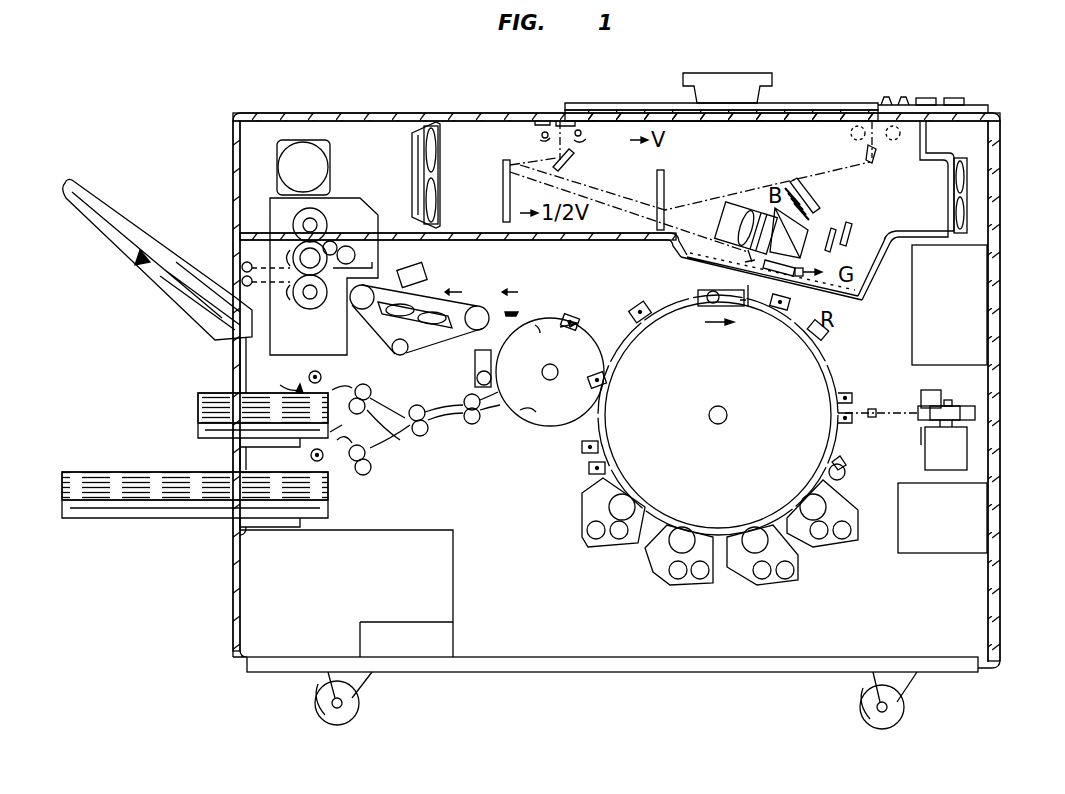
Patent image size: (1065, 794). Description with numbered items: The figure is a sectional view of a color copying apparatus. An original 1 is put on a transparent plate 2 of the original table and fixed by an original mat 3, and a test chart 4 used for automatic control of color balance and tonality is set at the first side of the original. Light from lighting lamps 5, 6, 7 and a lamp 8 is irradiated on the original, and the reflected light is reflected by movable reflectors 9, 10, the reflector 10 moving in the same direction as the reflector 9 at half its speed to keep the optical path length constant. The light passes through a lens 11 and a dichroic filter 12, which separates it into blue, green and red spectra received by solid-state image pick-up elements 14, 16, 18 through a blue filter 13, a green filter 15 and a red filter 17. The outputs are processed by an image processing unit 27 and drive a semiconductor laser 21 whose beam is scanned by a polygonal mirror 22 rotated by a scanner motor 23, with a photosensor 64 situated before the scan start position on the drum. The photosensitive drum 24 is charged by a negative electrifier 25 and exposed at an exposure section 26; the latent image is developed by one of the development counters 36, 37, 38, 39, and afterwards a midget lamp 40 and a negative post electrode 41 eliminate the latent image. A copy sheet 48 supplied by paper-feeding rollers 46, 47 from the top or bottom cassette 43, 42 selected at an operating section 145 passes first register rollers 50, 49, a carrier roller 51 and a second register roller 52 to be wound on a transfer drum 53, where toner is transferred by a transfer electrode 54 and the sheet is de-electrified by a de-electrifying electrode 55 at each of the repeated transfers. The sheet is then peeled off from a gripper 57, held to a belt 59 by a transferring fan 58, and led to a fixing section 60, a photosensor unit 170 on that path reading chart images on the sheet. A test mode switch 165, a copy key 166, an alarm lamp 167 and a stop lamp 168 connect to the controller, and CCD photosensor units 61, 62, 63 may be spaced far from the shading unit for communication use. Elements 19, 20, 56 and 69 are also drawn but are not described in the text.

The original 1 is at (851, 111).
The transparent plate 2 is at (796, 110).
The original mat 3 is at (614, 103).
The test chart 4 is at (541, 120).
The lighting lamp 5 is at (542, 135).
The lighting lamp 6 is at (581, 133).
The lighting lamp 7 is at (540, 140).
The lamp 8 is at (586, 140).
The movable reflector 9 is at (570, 165).
The movable reflector 10 is at (503, 166).
The lens 11 is at (725, 245).
The dichroic filter 12 is at (810, 222).
The blue filter 13 is at (786, 190).
The solid-state image pick-up element 14 is at (832, 192).
The green filter 15 is at (862, 216).
The solid-state image pick-up element 16 is at (836, 240).
The red filter 17 is at (757, 260).
The solid-state image pick-up element 18 is at (820, 279).
The fan 19 is at (968, 195).
The fan 20 is at (420, 168).
The semiconductor laser 21 is at (941, 394).
The polygonal mirror 22 is at (975, 414).
The scanner motor 23 is at (967, 450).
The photosensitive drum 24 is at (833, 373).
The negative electrifier 25 is at (466, 603).
The exposure section 26 is at (852, 396).
The image processing unit 27 is at (978, 276).
The development counter 36 is at (858, 540).
The development counter 37 is at (798, 580).
The development counter 38 is at (708, 585).
The development counter 39 is at (610, 547).
The midget lamp 40 is at (588, 472).
The negative post electrode 41 is at (580, 450).
The cassette 42 is at (163, 518).
The cassette 43 is at (214, 393).
The paper-feeding roller 46 is at (322, 375).
The paper-feeding roller 47 is at (324, 452).
The copy sheet 48 is at (296, 390).
The first register roller 49 is at (363, 475).
The first register roller 50 is at (371, 390).
The carrier roller 51 is at (420, 436).
The second register roller 52 is at (472, 424).
The transfer drum 53 is at (527, 425).
The transfer electrode 54 is at (590, 390).
The de-electrifying electrode 55 is at (575, 310).
The cleaning unit 56 is at (474, 368).
The gripper 57 is at (515, 333).
The transferring fan 58 is at (420, 326).
The belt 59 is at (448, 308).
The fixing section 60 is at (272, 215).
The CCD photosensor unit 61 is at (630, 316).
The CCD photosensor unit 62 is at (696, 296).
The CCD photosensor unit 63 is at (790, 304).
The photosensor 64 is at (872, 418).
The power supply 69 is at (978, 517).
The operating section 145 is at (975, 107).
The test mode switch 165 is at (932, 97).
The copy key 166 is at (960, 97).
The alarm lamp 167 is at (892, 86).
The stop lamp 168 is at (906, 96).
The photosensor unit 170 is at (420, 265).